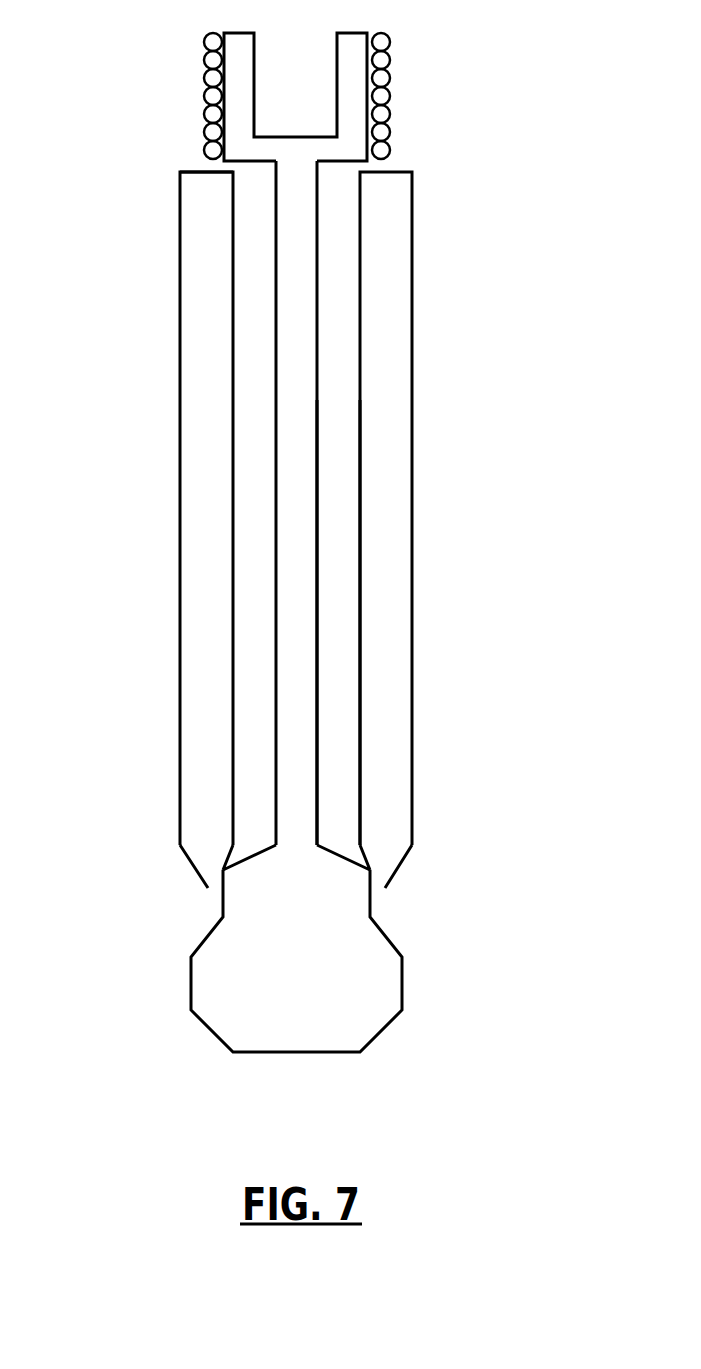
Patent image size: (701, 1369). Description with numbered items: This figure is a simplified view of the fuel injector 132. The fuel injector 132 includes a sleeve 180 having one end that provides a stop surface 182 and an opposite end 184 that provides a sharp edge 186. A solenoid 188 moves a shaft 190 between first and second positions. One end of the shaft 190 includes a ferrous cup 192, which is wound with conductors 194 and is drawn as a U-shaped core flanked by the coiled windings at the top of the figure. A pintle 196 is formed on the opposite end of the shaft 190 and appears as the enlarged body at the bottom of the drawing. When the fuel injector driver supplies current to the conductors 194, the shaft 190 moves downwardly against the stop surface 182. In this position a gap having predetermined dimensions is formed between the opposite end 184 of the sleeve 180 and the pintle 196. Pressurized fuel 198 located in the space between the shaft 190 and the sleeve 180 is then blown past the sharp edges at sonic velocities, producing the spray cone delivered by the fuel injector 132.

The fuel injector 132 is at (306, 526).
The sleeve 180 is at (202, 320).
The stop surface 182 is at (180, 150).
The opposite end 184 is at (168, 875).
The sharp edge 186 is at (223, 870).
The solenoid 188 is at (364, 80).
The shaft 190 is at (300, 387).
The ferrous cup 192 is at (235, 58).
The conductors 194 is at (388, 42).
The pintle 196 is at (306, 984).
The pressurized fuel 198 is at (333, 441).